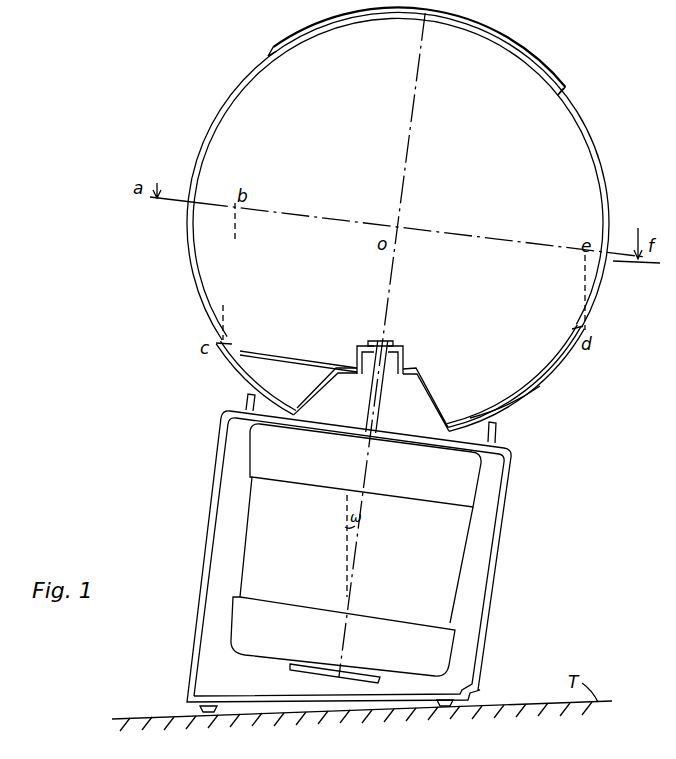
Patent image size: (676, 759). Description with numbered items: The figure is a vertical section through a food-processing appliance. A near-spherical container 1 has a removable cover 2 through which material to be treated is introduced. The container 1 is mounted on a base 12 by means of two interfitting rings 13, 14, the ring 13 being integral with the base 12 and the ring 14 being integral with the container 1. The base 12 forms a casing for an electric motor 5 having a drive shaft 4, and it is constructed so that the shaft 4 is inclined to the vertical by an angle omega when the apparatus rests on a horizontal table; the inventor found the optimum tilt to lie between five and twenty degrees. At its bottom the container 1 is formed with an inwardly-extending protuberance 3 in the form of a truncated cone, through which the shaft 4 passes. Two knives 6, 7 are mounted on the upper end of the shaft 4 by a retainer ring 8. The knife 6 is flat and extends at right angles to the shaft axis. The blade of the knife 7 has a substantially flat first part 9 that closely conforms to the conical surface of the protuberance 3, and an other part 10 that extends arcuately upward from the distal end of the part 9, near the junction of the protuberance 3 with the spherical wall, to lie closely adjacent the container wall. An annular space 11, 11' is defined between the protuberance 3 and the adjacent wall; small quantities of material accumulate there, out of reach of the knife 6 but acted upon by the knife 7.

The container 1 is at (189, 272).
The removable cover 2 is at (535, 73).
The inwardly-extending protuberance 3 is at (322, 385).
The drive shaft 4 is at (378, 410).
The electric motor 5 is at (388, 490).
The knife 6 is at (286, 356).
The knife 7 is at (528, 392).
The retainer ring 8 is at (396, 350).
The first part 9 is at (428, 384).
The other part 10 is at (515, 390).
The annular space 11 is at (463, 398).
The annular space 11' is at (262, 378).
The base 12 is at (511, 572).
The ring 13 is at (497, 432).
The ring 14 is at (246, 402).